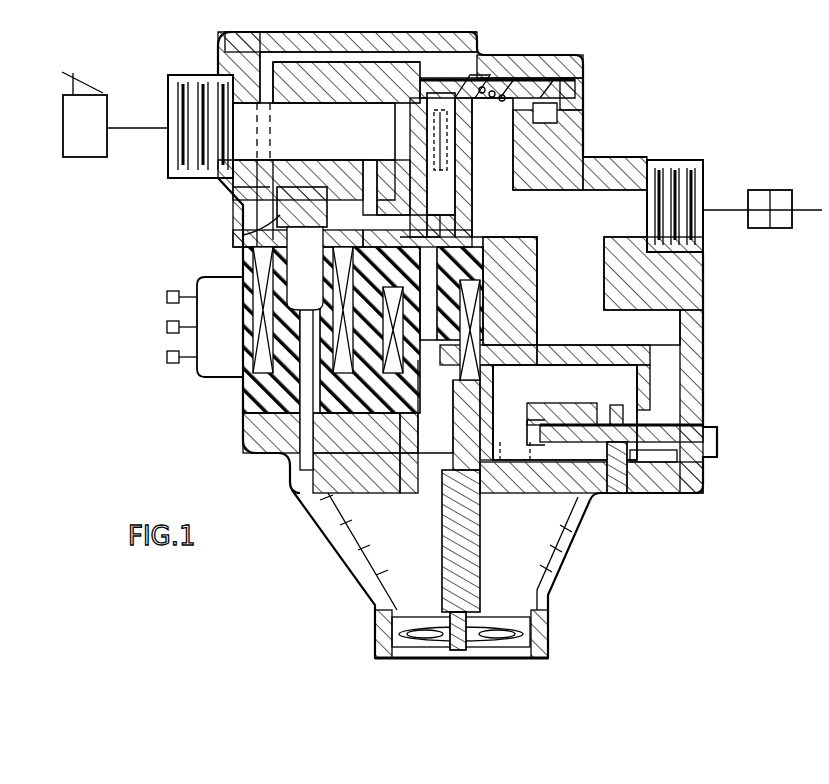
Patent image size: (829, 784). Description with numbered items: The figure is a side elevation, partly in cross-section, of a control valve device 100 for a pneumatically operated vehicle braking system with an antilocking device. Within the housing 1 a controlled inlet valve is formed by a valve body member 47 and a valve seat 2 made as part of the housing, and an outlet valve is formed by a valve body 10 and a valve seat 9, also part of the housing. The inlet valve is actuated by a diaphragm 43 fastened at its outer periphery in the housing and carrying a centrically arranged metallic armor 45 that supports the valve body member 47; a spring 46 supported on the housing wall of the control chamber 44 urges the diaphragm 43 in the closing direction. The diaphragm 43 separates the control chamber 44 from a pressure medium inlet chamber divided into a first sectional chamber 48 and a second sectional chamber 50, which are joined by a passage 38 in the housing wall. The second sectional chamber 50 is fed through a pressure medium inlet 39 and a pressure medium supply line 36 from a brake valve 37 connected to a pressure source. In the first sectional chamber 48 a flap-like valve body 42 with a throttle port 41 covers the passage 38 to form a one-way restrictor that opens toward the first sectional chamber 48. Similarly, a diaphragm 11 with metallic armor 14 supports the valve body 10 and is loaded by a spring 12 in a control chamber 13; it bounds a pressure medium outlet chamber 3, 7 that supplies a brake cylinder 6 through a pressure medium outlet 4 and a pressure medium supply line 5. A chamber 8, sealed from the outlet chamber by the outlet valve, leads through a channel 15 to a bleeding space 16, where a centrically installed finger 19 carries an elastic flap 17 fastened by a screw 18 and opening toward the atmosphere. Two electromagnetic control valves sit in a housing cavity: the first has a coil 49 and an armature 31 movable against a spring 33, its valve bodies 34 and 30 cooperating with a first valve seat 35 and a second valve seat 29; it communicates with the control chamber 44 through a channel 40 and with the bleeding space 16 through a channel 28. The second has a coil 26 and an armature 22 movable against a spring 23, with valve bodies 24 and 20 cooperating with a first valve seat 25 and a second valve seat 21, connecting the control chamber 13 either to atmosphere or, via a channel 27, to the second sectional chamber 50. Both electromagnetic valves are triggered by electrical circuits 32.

The housing 1 is at (568, 108).
The valve seat 2 is at (521, 125).
The pressure medium outlet chamber 3 is at (566, 190).
The pressure medium outlet 4 is at (704, 233).
The pressure medium supply line 5 is at (705, 210).
The brake cylinder 6 is at (780, 200).
The pressure medium outlet chamber 7 is at (585, 282).
The chamber 8 is at (577, 378).
The valve seat 9 is at (625, 408).
The valve body 10 is at (660, 430).
The diaphragm 11 is at (705, 438).
The spring 12 is at (650, 452).
The control chamber 13 is at (656, 486).
The metallic armor 14 is at (618, 488).
The channel 15 is at (530, 478).
The bleeding space 16 is at (558, 570).
The elastic flap 17 is at (525, 645).
The screw 18 is at (465, 650).
The finger 19 is at (470, 581).
The valve body 20 is at (484, 494).
The second valve seat 21 is at (435, 490).
The armature 22 is at (575, 364).
The spring 23 is at (383, 456).
The valve body 24 is at (440, 335).
The first valve seat 25 is at (455, 332).
The coil 26 is at (400, 425).
The channel 27 is at (442, 270).
The channel 28 is at (250, 400).
The second valve seat 29 is at (300, 325).
The valve body 30 is at (305, 330).
The armature 31 is at (297, 278).
The electrical circuits 32 is at (167, 327).
The spring 33 is at (280, 215).
The valve body 34 is at (262, 212).
The first valve seat 35 is at (296, 187).
The pressure medium supply line 36 is at (141, 128).
The brake valve 37 is at (63, 116).
The passage 38 is at (430, 158).
The pressure medium inlet 39 is at (172, 160).
The channel 40 is at (300, 55).
The throttle port 41 is at (440, 210).
The flap-like valve body 42 is at (405, 118).
The diaphragm 43 is at (425, 82).
The control chamber 44 is at (462, 60).
The metallic armor 45 is at (490, 72).
The spring 46 is at (506, 80).
The valve body member 47 is at (548, 82).
The first sectional chamber 48 is at (455, 133).
The coil 49 is at (243, 272).
The second sectional chamber 50 is at (327, 112).
The control valve device 100 is at (597, 52).